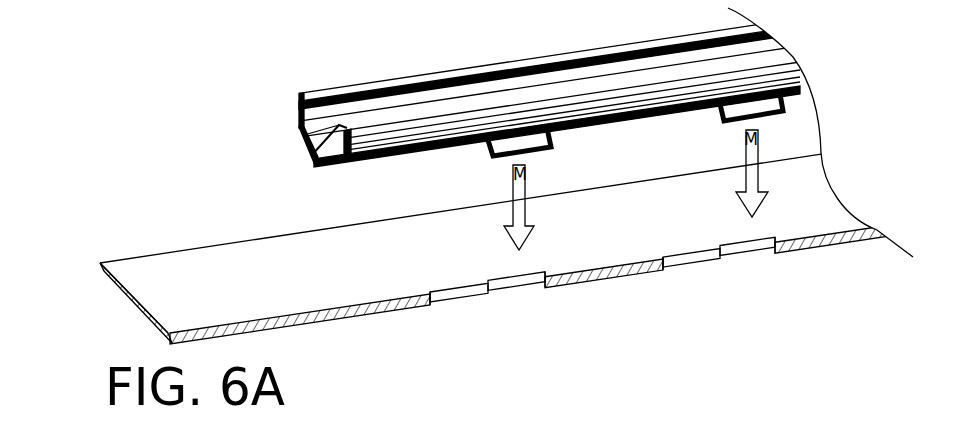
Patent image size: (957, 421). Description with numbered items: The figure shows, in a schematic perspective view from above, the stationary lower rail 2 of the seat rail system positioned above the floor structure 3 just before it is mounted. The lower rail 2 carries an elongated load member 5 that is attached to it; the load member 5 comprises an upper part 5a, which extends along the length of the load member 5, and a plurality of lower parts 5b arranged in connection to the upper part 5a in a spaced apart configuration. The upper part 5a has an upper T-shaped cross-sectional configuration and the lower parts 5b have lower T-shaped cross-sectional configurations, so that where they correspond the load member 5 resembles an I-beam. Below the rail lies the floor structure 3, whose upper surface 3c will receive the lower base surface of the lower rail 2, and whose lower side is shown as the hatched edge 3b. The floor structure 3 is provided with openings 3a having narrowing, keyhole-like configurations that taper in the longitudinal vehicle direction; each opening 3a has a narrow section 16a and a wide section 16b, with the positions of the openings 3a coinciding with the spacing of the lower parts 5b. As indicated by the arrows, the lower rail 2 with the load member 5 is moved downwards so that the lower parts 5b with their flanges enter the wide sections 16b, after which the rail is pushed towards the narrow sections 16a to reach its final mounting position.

The lower rail 2 is at (450, 95).
The load member 5 is at (578, 103).
The upper part 5a is at (316, 158).
The lower parts 5b is at (540, 150).
The floor structure 3 is at (178, 267).
The openings 3a is at (440, 330).
The bottom side of plate 3b is at (354, 342).
The upper surface 3c is at (234, 236).
The narrow sections 16a is at (482, 328).
The wide sections 16b is at (538, 322).